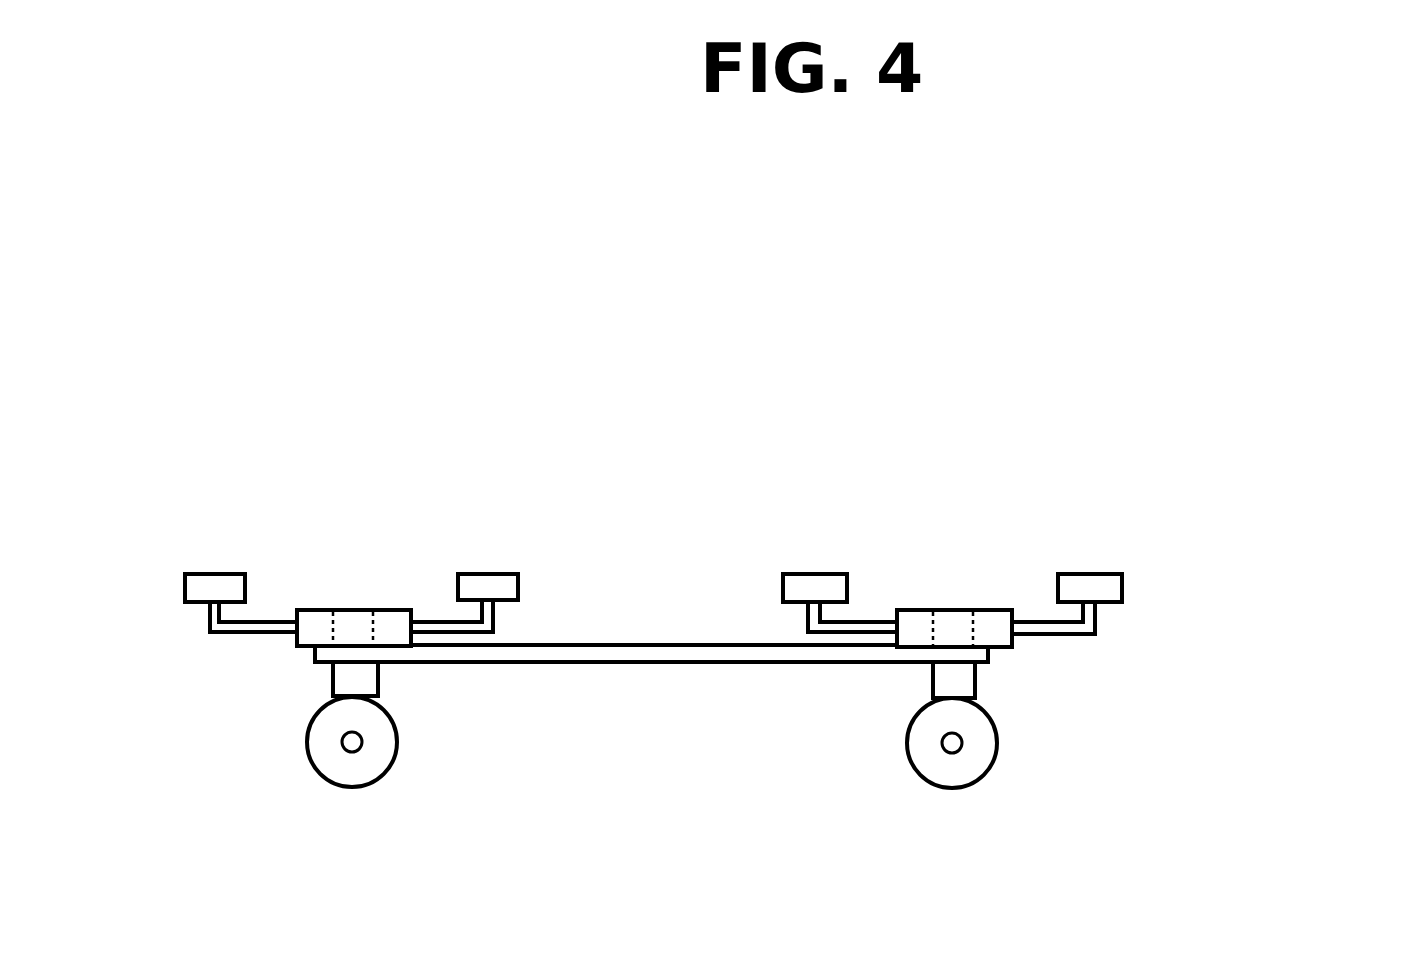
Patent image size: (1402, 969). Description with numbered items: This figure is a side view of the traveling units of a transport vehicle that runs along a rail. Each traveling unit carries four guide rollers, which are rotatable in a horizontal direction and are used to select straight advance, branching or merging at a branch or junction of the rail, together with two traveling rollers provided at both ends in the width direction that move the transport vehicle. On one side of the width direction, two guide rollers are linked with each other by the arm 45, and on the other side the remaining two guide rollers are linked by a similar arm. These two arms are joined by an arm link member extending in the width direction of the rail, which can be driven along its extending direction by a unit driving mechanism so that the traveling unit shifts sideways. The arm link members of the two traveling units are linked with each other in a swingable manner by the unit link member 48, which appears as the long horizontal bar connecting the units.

The arm 45 is at (1073, 635).
The unit link member 48 is at (675, 667).